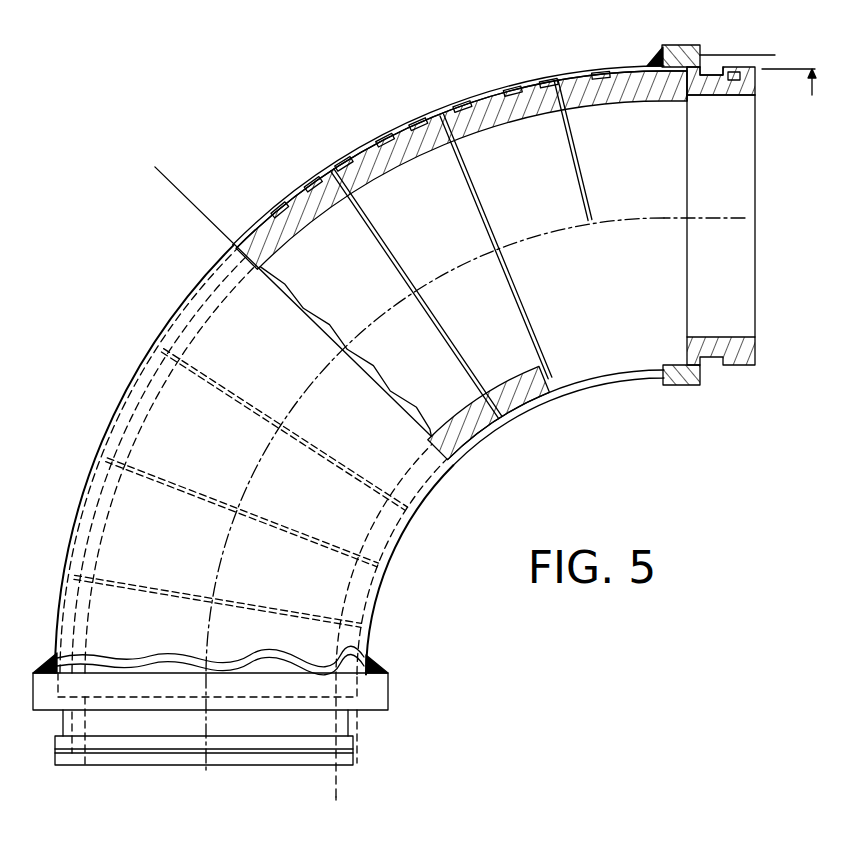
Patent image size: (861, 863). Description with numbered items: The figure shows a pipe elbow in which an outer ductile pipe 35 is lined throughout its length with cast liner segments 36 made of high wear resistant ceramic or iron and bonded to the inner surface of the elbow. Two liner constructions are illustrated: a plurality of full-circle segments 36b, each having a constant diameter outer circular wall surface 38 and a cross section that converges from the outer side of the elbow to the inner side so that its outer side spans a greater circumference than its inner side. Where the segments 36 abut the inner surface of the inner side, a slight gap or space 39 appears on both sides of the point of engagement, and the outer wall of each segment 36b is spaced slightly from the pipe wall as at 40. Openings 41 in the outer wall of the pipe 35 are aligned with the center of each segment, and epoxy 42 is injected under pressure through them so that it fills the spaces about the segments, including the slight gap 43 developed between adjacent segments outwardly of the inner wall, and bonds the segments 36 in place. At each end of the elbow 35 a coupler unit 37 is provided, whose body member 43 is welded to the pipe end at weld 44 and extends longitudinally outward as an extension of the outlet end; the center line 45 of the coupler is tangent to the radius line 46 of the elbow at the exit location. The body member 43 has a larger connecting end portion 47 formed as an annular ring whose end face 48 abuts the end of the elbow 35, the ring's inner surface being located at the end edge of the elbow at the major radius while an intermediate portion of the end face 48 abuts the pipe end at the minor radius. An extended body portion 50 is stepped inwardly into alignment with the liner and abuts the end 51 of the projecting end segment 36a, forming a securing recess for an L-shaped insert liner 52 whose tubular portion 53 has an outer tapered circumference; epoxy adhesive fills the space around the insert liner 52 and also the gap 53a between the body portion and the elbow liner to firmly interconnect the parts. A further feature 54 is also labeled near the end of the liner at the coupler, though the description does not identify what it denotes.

The outer ductile pipe 35 is at (540, 74).
The liner segments 36 is at (570, 423).
The end segments 36a is at (642, 112).
The 360° segments 36b is at (358, 282).
The coupler units 37 is at (735, 42).
The outer circular wall surface 38 is at (417, 118).
The gap or space 39 is at (542, 393).
The spacing 40 is at (342, 160).
The openings 41 is at (380, 137).
The epoxy 42 is at (521, 88).
The body member 43 is at (686, 40).
The weld 44 is at (653, 56).
The center line 45 is at (733, 212).
The radius line 46 is at (470, 257).
The connecting end portion 47 is at (668, 44).
The end face 48 is at (660, 380).
The extended body portion 50 is at (718, 92).
The end of elbow liner 51 is at (687, 110).
The insert liner 52 is at (746, 81).
The tubular portion 53 is at (698, 94).
The gap 53a is at (761, 68).
The lining end face 54 is at (672, 68).